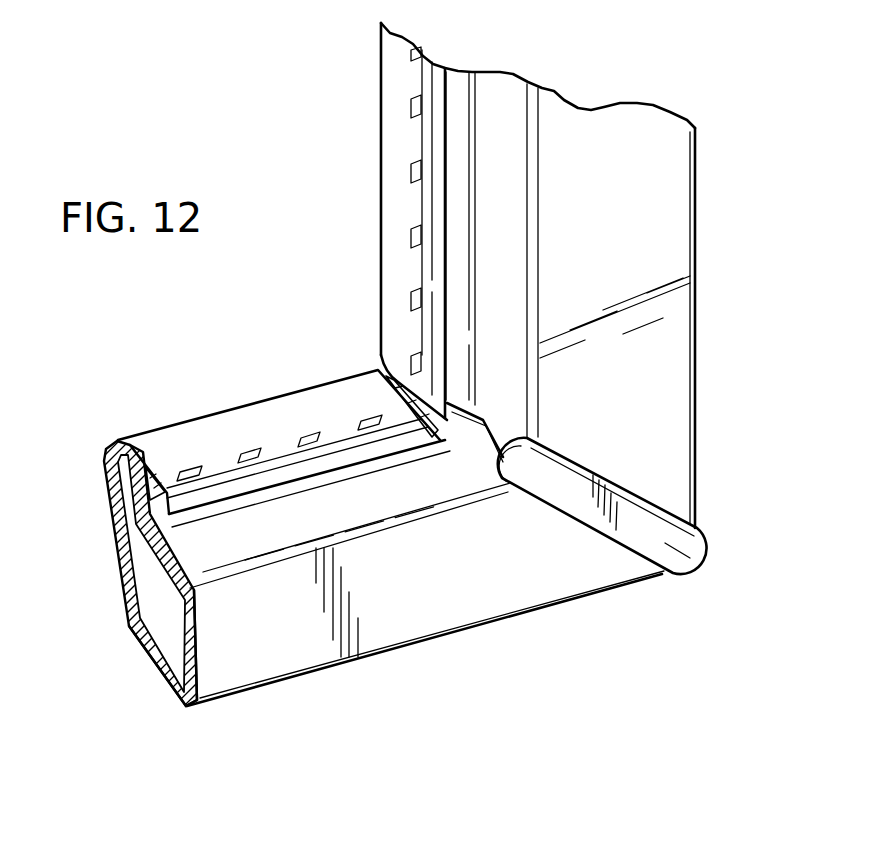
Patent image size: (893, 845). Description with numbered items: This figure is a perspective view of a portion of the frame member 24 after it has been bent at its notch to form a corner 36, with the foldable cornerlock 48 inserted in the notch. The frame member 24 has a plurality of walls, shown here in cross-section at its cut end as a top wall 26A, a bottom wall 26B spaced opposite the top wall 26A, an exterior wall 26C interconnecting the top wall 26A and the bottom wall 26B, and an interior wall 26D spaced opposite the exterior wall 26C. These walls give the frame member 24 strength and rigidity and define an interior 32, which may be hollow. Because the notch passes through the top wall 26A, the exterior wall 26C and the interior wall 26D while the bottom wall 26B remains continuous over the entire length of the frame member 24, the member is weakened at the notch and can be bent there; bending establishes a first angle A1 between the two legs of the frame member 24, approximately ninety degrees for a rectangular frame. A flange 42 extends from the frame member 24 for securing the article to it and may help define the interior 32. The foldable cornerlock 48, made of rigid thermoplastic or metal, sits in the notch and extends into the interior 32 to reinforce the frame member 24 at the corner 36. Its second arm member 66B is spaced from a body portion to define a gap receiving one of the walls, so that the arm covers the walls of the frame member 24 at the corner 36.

The frame member 24 is at (660, 387).
The top wall 26A is at (505, 108).
The bottom wall 26B is at (148, 663).
The exterior wall 26C is at (120, 536).
The interior wall 26D is at (193, 647).
The interior 32 is at (162, 630).
The corner 36 is at (668, 610).
The flange 42 is at (362, 98).
The foldable cornerlock 48 is at (712, 533).
The second arm member 66B is at (665, 543).
The first angle A1 is at (405, 225).